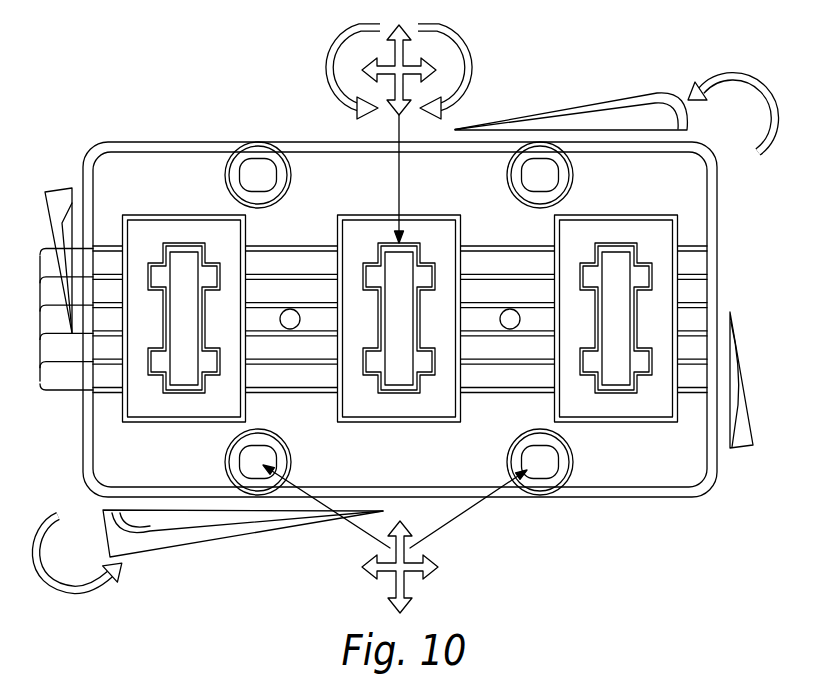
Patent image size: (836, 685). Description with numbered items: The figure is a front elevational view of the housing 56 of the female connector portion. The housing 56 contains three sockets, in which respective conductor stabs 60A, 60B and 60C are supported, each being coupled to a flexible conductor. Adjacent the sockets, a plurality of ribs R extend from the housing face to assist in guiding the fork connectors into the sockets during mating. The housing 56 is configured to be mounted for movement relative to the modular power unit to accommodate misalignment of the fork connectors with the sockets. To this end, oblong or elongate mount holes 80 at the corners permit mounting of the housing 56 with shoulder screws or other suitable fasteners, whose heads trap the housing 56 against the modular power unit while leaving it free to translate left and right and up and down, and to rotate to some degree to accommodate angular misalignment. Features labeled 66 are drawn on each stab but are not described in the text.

The housing 56 is at (187, 182).
The ribs R is at (40, 311).
The conductor stab 60A is at (184, 376).
The conductor stab 60B is at (400, 375).
The conductor stab 60C is at (622, 373).
The latch tab 66 is at (162, 277).
The mount holes 80 is at (257, 175).